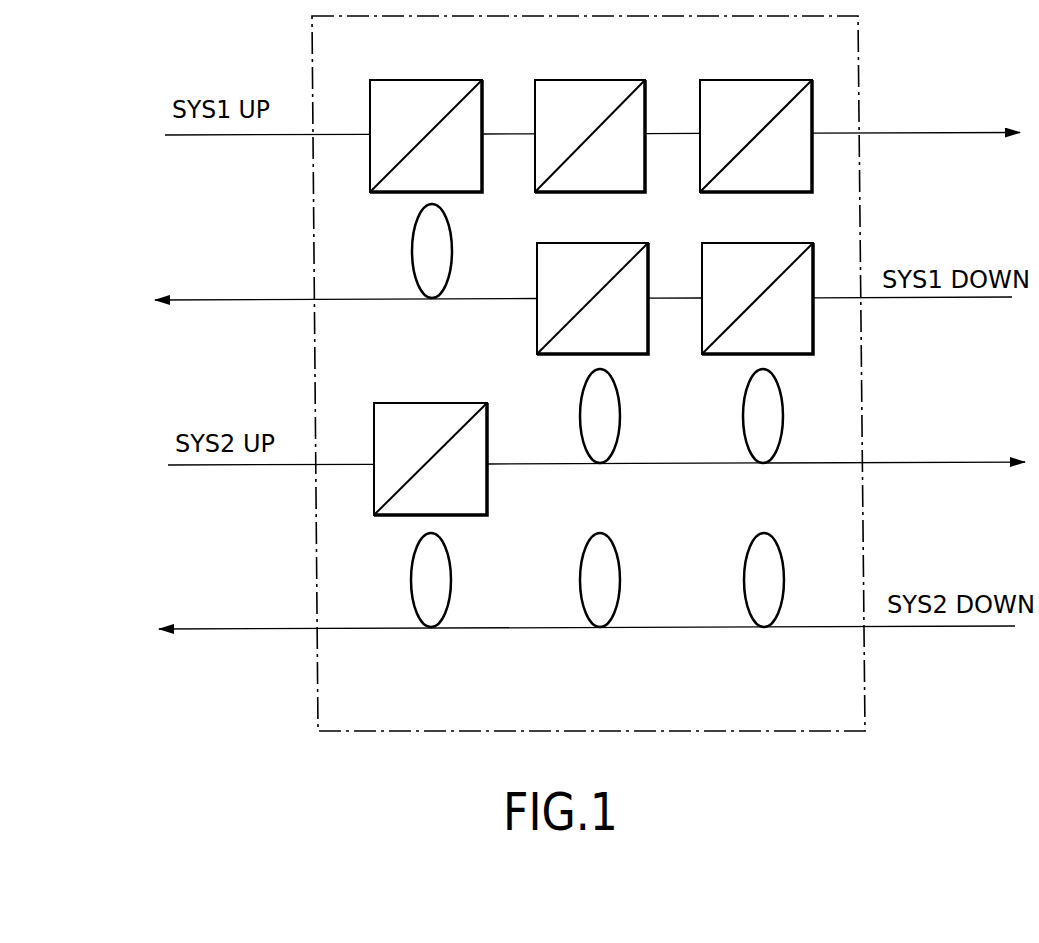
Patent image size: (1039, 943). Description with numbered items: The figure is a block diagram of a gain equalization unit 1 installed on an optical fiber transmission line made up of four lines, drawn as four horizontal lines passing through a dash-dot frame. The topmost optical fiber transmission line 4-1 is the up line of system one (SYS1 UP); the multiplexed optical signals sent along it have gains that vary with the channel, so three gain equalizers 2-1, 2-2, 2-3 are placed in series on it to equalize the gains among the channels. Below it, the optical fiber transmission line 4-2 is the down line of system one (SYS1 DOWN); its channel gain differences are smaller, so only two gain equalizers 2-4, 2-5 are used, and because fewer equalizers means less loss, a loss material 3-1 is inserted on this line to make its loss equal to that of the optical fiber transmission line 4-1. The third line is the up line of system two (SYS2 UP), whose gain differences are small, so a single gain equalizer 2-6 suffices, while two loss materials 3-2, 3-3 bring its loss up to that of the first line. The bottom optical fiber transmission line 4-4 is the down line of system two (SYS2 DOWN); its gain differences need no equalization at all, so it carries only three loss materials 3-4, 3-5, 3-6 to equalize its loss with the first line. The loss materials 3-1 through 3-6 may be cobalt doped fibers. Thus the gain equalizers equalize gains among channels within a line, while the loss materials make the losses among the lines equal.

The gain equalization unit 1 is at (859, 80).
The gain equalizer 2-1 is at (416, 82).
The gain equalizer 2-2 is at (583, 82).
The gain equalizer 2-3 is at (746, 82).
The gain equalizer 2-4 is at (582, 244).
The gain equalizer 2-5 is at (747, 244).
The gain equalizer 2-6 is at (422, 404).
The loss material 3-1 is at (451, 232).
The loss material 3-2 is at (619, 400).
The loss material 3-3 is at (782, 400).
The loss material 3-4 is at (783, 562).
The loss material 3-5 is at (619, 562).
The loss material 3-6 is at (450, 562).
The optical fiber transmission line 4-1 is at (342, 137).
The optical fiber transmission line 4-2 is at (357, 301).
The optical fiber transmission line 4-4 is at (357, 631).